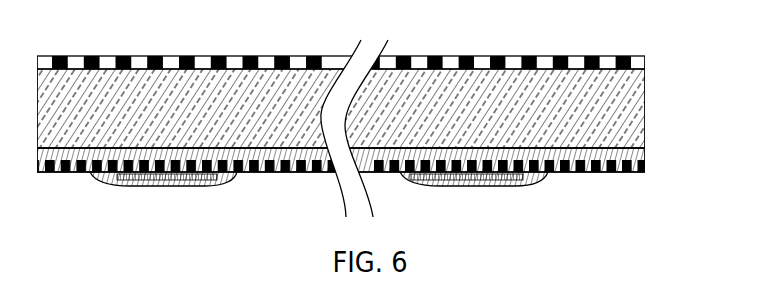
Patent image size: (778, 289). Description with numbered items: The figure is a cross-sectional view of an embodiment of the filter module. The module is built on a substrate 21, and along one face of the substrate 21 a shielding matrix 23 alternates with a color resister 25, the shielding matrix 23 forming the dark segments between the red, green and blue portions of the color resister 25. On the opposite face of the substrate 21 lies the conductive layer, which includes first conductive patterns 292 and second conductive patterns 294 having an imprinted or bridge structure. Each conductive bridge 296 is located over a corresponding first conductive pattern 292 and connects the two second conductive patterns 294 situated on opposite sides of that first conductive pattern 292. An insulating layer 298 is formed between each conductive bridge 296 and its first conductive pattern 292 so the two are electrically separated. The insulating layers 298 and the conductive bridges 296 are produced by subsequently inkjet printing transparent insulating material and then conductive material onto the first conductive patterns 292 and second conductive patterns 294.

The substrate 21 is at (623, 126).
The shielding matrix 23 is at (582, 60).
The color resister 25 is at (635, 63).
The first conductive pattern 292 is at (487, 178).
The second conductive pattern 294 is at (552, 172).
The conductive bridge 296 is at (227, 178).
The insulating layer 298 is at (176, 181).